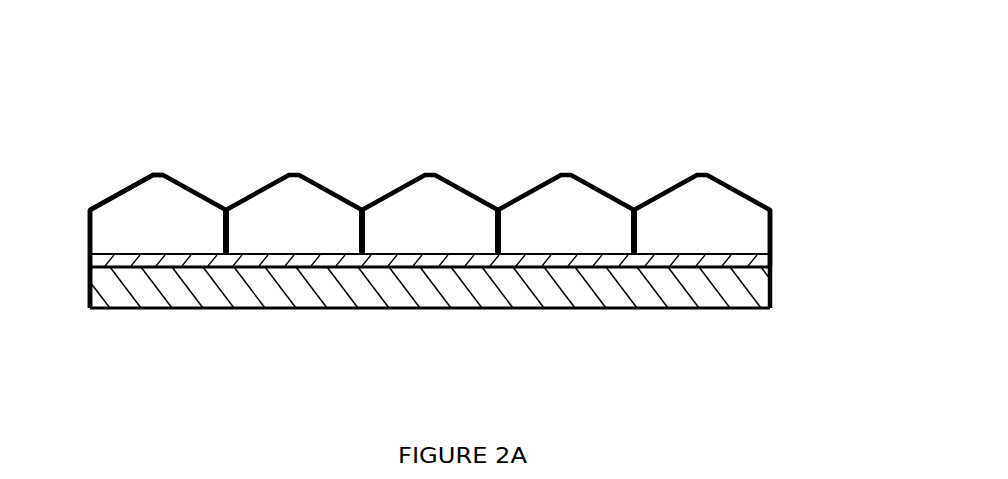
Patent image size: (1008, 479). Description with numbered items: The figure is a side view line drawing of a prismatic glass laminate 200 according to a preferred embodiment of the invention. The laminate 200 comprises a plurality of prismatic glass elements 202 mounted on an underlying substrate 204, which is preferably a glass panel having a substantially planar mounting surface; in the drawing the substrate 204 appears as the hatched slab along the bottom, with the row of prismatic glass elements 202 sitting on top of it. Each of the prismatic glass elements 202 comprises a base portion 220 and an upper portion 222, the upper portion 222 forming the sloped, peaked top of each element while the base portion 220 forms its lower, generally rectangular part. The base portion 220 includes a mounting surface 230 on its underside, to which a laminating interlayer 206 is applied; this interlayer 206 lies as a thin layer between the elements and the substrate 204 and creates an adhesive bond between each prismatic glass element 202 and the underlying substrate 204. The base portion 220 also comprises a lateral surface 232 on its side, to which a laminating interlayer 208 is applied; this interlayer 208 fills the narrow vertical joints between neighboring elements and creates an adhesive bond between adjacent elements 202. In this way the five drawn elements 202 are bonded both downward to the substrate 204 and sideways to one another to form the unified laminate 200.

The prismatic glass laminate 200 is at (210, 80).
The prismatic glass elements 202 is at (722, 182).
The underlying substrate 204 is at (672, 309).
The laminating interlayer 206 is at (772, 258).
The laminating interlayer 208 is at (498, 212).
The base portion 220 is at (83, 223).
The upper portion 222 is at (113, 183).
The mounting surface 230 is at (88, 268).
The lateral surface 232 is at (770, 230).